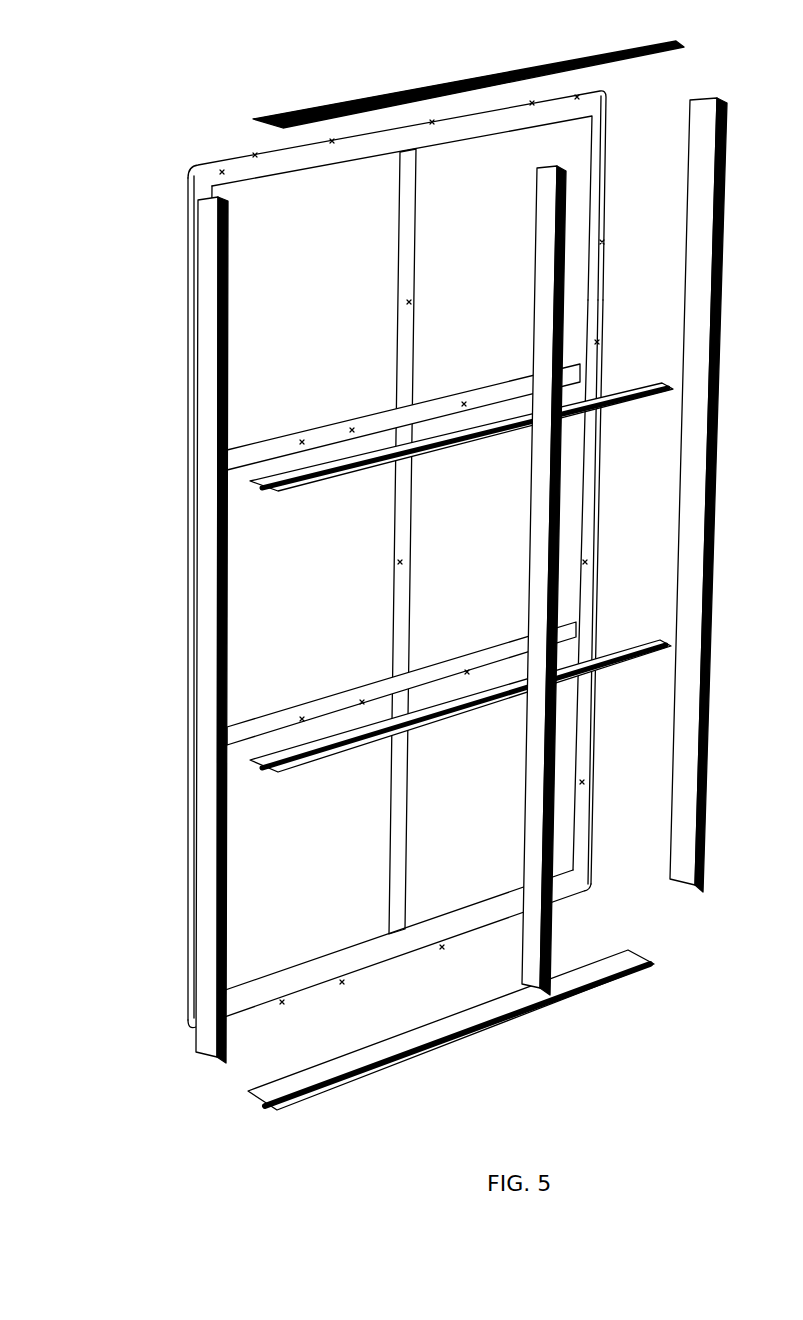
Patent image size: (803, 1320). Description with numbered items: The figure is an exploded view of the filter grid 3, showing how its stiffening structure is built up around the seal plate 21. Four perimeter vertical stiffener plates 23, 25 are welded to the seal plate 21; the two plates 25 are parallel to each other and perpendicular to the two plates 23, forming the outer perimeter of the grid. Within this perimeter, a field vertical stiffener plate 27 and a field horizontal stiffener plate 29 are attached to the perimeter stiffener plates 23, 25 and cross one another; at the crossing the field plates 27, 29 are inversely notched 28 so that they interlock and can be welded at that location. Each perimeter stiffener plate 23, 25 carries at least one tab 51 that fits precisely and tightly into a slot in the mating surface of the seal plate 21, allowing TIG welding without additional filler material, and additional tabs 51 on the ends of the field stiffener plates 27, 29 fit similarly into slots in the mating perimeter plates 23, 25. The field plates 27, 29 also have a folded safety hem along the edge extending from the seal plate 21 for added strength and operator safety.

The filter grid 3 is at (108, 45).
The seal plate 21 is at (218, 178).
The perimeter vertical stiffener plate 23 is at (208, 347).
The perimeter vertical stiffener plate 25 is at (258, 1083).
The field vertical stiffener plate 27 is at (540, 950).
The notch 28 is at (547, 450).
The field horizontal stiffener plate 29 is at (327, 733).
The tab 51 is at (198, 240).